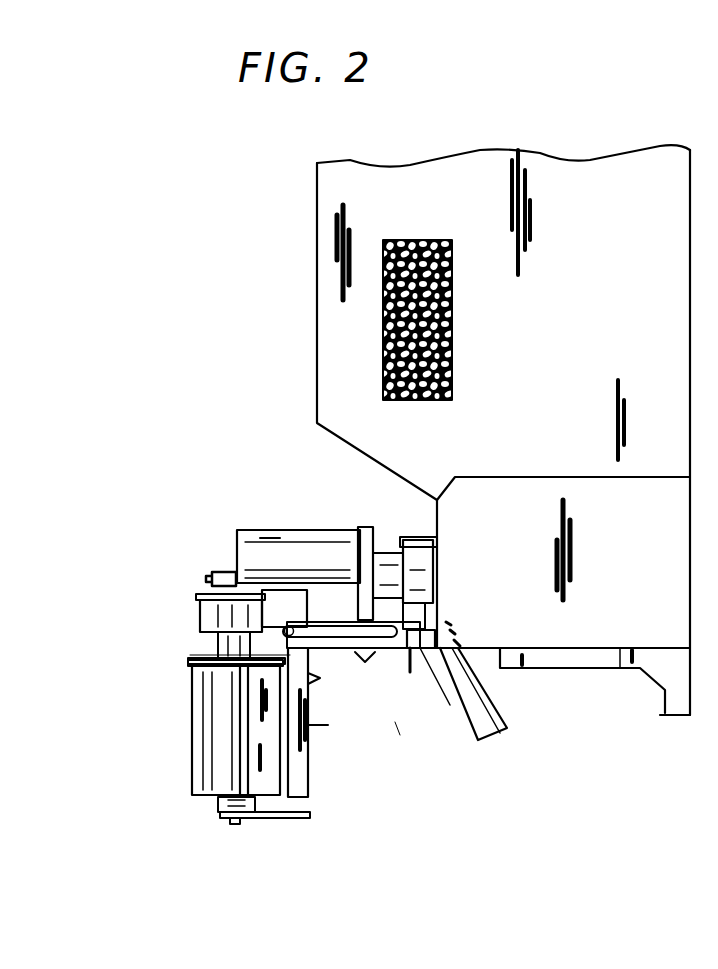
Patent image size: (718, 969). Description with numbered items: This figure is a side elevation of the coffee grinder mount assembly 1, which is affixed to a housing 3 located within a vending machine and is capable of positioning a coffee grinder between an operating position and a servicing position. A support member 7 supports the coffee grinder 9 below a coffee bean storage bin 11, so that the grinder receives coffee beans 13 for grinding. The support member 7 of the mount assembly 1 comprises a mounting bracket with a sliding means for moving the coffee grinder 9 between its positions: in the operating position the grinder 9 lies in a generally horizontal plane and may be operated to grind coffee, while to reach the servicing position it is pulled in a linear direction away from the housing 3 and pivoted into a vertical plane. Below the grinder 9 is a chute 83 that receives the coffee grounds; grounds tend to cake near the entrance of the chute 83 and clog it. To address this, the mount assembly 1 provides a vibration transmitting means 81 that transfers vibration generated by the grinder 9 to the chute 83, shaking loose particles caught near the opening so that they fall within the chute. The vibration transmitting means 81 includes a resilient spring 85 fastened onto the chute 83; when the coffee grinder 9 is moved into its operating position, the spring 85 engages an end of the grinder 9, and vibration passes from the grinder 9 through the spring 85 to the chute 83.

The coffee grinder mount assembly 1 is at (229, 470).
The housing 3 is at (432, 515).
The support member 7 is at (399, 726).
The coffee grinder 9 is at (280, 533).
The coffee bean storage bin 11 is at (586, 186).
The coffee beans 13 is at (453, 352).
The vibration transmitting means 81 is at (503, 681).
The chute 83 is at (443, 670).
The resilient spring 85 is at (456, 640).